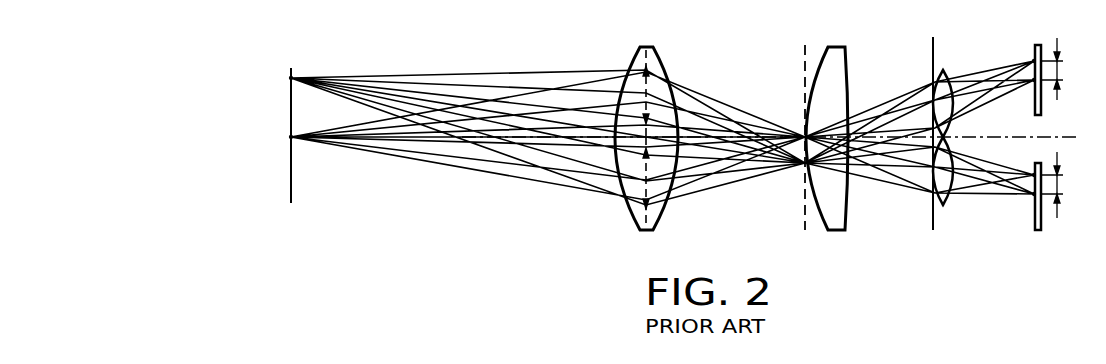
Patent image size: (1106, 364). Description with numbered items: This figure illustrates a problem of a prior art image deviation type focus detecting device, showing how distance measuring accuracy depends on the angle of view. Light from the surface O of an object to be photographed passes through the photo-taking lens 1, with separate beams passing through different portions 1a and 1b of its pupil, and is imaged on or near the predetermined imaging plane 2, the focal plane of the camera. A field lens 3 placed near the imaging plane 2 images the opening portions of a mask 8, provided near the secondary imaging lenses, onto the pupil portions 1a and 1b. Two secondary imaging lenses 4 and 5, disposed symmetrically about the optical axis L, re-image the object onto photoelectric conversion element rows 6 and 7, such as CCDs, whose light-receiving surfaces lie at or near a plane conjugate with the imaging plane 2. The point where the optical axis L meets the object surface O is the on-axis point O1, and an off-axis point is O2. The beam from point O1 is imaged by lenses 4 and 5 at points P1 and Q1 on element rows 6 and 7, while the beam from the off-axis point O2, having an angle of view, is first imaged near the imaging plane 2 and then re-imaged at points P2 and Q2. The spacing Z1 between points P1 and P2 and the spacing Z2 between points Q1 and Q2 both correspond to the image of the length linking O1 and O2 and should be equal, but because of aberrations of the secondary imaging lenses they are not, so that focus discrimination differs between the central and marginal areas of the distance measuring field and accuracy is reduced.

The photo-taking lens 1 is at (660, 218).
The portion of the pupil of the photo-taking lens 1a is at (645, 193).
The portion of the pupil of the photo-taking lens 1b is at (645, 95).
The predetermined imaging plane 2 is at (804, 50).
The field lens 3 is at (832, 50).
The secondary imaging lens 4 is at (945, 71).
The secondary imaging lens 5 is at (945, 207).
The photoelectric conversion element row 6 is at (1039, 45).
The photoelectric conversion element row 7 is at (1042, 229).
The mask 8 is at (934, 46).
The surface of an object to be photographed O is at (290, 183).
The point of intersection between the optical axis and the object surface O1 is at (290, 138).
The off-axis point O2 is at (292, 77).
The imaging point of the on-axis light beam P1 is at (1031, 83).
The re-imaging point of the off-axis light beam P2 is at (1030, 59).
The imaging point of the on-axis light beam Q1 is at (1031, 196).
The re-imaging point of the off-axis light beam Q2 is at (1031, 174).
The spacing between the points P1 and P2 Z1 is at (1064, 69).
The spacing between the points Q1 and Q2 Z2 is at (1065, 185).
The optical axis L is at (1079, 137).